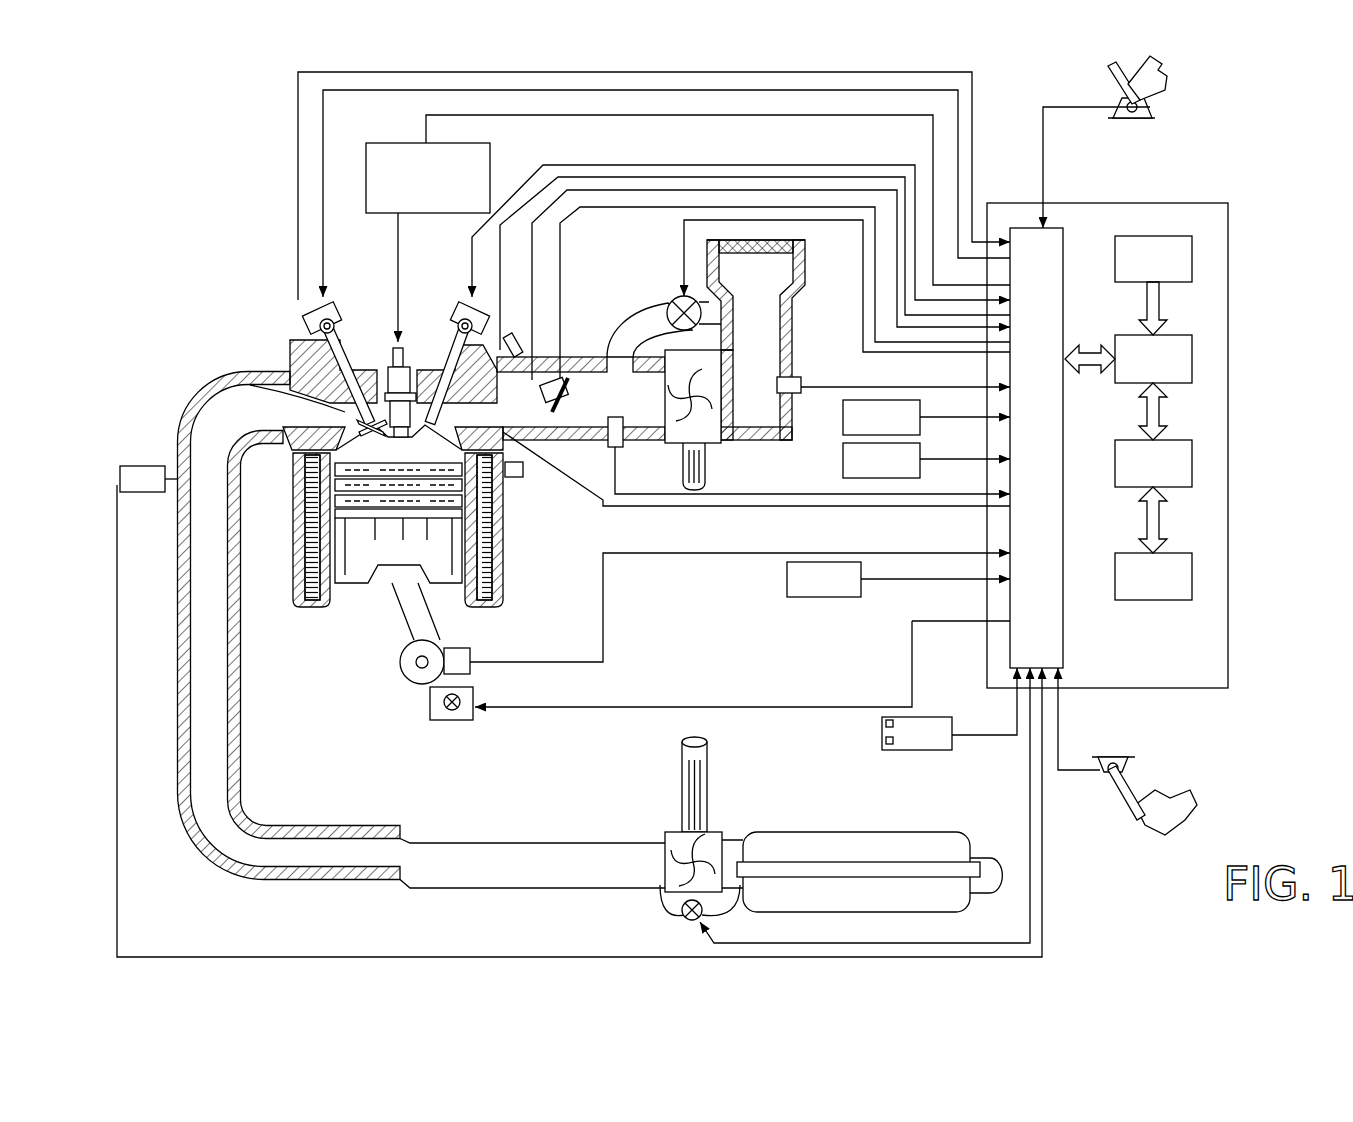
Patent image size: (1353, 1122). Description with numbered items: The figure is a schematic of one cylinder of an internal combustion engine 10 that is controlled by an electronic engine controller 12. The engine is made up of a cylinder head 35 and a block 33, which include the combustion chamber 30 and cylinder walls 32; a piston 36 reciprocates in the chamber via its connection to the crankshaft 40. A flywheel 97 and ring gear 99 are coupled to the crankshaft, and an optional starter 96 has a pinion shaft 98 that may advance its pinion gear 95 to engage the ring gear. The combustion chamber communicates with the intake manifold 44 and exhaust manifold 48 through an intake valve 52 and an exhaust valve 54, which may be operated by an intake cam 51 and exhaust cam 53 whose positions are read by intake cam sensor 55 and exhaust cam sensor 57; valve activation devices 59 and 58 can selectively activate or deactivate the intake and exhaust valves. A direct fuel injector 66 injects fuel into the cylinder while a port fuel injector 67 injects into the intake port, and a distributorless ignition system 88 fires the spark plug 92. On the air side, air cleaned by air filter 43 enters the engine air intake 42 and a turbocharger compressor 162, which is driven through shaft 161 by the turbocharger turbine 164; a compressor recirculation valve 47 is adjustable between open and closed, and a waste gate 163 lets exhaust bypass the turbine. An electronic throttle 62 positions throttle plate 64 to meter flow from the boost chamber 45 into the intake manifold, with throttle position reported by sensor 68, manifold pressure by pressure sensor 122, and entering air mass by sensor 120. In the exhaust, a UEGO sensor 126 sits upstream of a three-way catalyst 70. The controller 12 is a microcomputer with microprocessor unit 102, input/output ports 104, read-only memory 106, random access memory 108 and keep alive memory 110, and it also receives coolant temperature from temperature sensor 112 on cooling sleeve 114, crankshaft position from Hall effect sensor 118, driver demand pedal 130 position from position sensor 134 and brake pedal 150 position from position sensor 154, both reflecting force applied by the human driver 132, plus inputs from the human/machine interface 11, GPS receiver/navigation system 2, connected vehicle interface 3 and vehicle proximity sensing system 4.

The GPS receiver/navigation system 2 is at (926, 417).
The connected vehicle interface 3 is at (926, 460).
The vehicle proximity sensing system 4 is at (949, 709).
The internal combustion engine 10 is at (215, 290).
The human/machine interface 11 is at (898, 579).
The electronic engine controller 12 is at (1230, 203).
The combustion chamber 30 is at (313, 535).
The cylinder walls 32 is at (340, 600).
The block 33 is at (292, 485).
The cylinder head 35 is at (290, 338).
The piston 36 is at (378, 555).
The crankshaft 40 is at (395, 690).
The engine air intake 42 is at (630, 272).
The air filter 43 is at (778, 258).
The intake manifold 44 is at (506, 409).
The boost chamber 45 is at (613, 409).
The compressor recirculation valve 47 is at (676, 300).
The exhaust manifold 48 is at (242, 418).
The intake cam 51 is at (462, 310).
The intake valve 52 is at (447, 422).
The exhaust cam 53 is at (338, 312).
The exhaust valve 54 is at (292, 383).
The intake cam sensor 55 is at (480, 318).
The exhaust cam sensor 57 is at (318, 318).
The valve activation device 58 is at (340, 322).
The valve activation device 59 is at (462, 322).
The electronic throttle 62 is at (568, 392).
The throttle plate 64 is at (565, 410).
The direct fuel injector 66 is at (512, 476).
The port fuel injector 67 is at (513, 333).
The throttle position sensor 68 is at (556, 380).
The three-way catalyst 70 is at (795, 832).
The distributorless ignition system 88 is at (490, 152).
The spark plug 92 is at (403, 346).
The pinion gear 95 is at (462, 722).
The starter 96 is at (474, 718).
The flywheel 97 is at (385, 670).
The pinion shaft 98 is at (445, 715).
The ring gear 99 is at (408, 700).
The microprocessor unit 102 is at (1192, 360).
The input/output ports 104 is at (1065, 237).
The read-only memory 106 is at (1192, 262).
The random access memory 108 is at (1192, 463).
The keep alive memory 110 is at (1192, 575).
The temperature sensor 112 is at (524, 478).
The cooling sleeve 114 is at (490, 553).
The Hall effect sensor 118 is at (470, 650).
The air mass sensor 120 is at (800, 382).
The pressure sensor 122 is at (608, 443).
The Universal Exhaust Gas Oxygen sensor 126 is at (120, 476).
The driver demand pedal 130 is at (1108, 80).
The human driver 132 is at (1165, 73).
The position sensor 134 is at (1155, 107).
The brake pedal 150 is at (1130, 820).
The position sensor 154 is at (1105, 768).
The shaft 161 is at (682, 467).
The turbocharger compressor 162 is at (708, 422).
The waste gate 163 is at (683, 918).
The turbocharger turbine 164 is at (668, 832).